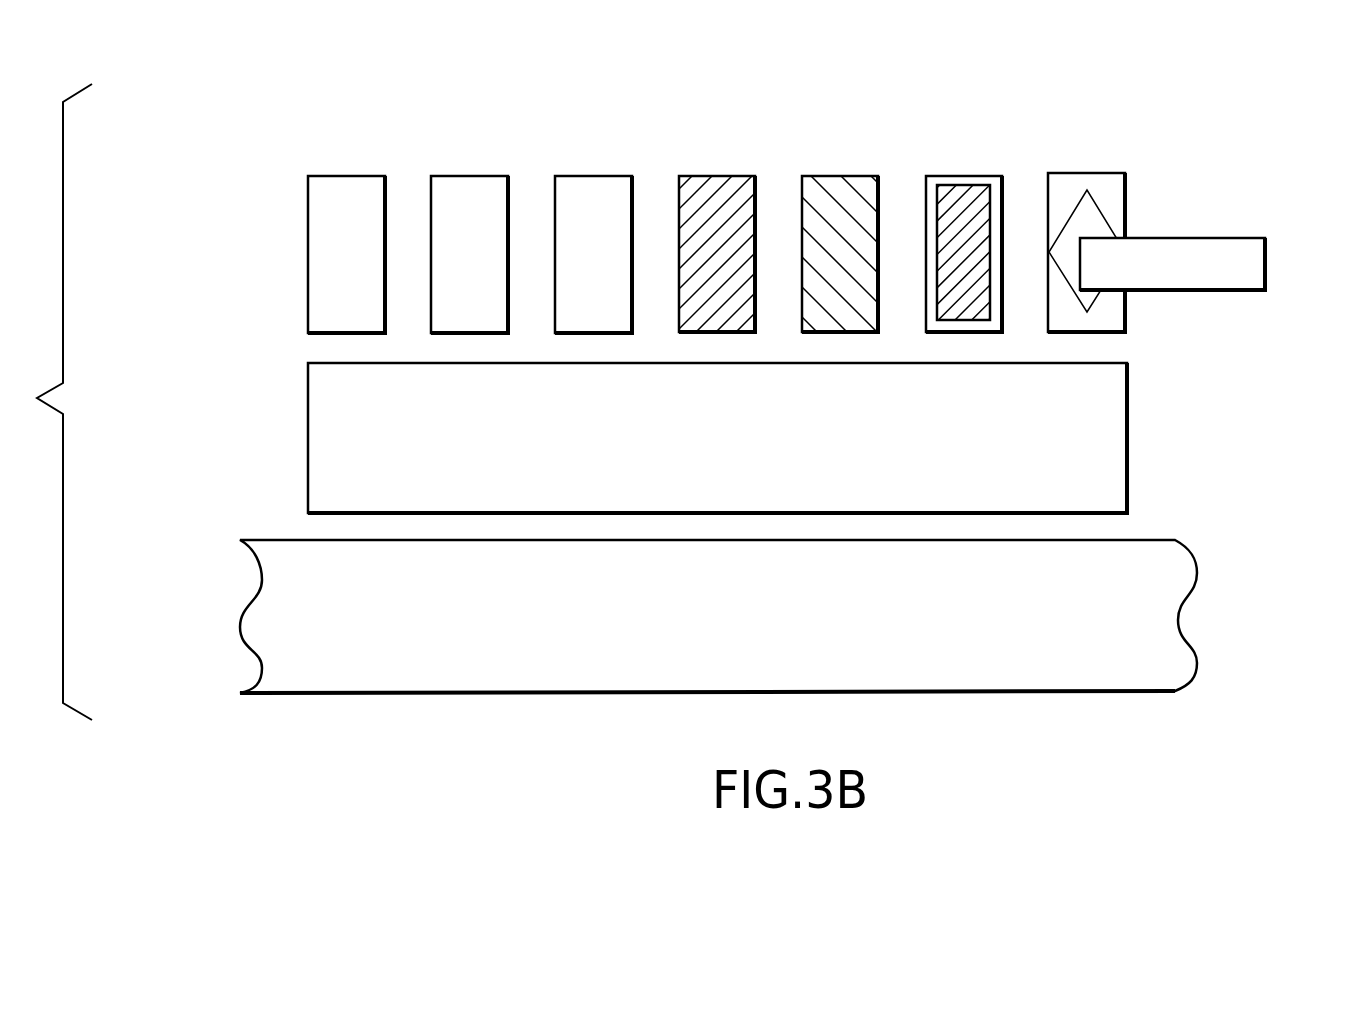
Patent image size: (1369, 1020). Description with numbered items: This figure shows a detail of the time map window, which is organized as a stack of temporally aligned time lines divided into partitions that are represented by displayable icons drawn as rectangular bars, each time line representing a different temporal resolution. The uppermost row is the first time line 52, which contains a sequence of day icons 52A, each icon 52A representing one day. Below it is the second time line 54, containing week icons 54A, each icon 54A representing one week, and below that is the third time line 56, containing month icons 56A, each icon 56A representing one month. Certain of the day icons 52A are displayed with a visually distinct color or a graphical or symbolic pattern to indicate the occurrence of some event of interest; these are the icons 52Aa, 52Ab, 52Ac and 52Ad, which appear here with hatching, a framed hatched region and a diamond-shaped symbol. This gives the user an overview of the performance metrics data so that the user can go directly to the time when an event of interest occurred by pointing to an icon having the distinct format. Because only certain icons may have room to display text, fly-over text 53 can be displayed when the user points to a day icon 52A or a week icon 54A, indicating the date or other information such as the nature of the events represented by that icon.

The first time line 52 is at (237, 243).
The day icon 52A is at (572, 176).
The day icon with visually distinct pattern 52Aa is at (718, 176).
The day icon with visually distinct pattern 52Ab is at (840, 176).
The day icon with visually distinct pattern 52Ac is at (965, 176).
The day icon with visually distinct pattern 52Ad is at (1085, 173).
The fly-over text 53 is at (1265, 262).
The second time line 54 is at (237, 436).
The week icon 54A is at (753, 447).
The third time line 56 is at (192, 608).
The month icon 56A is at (753, 625).